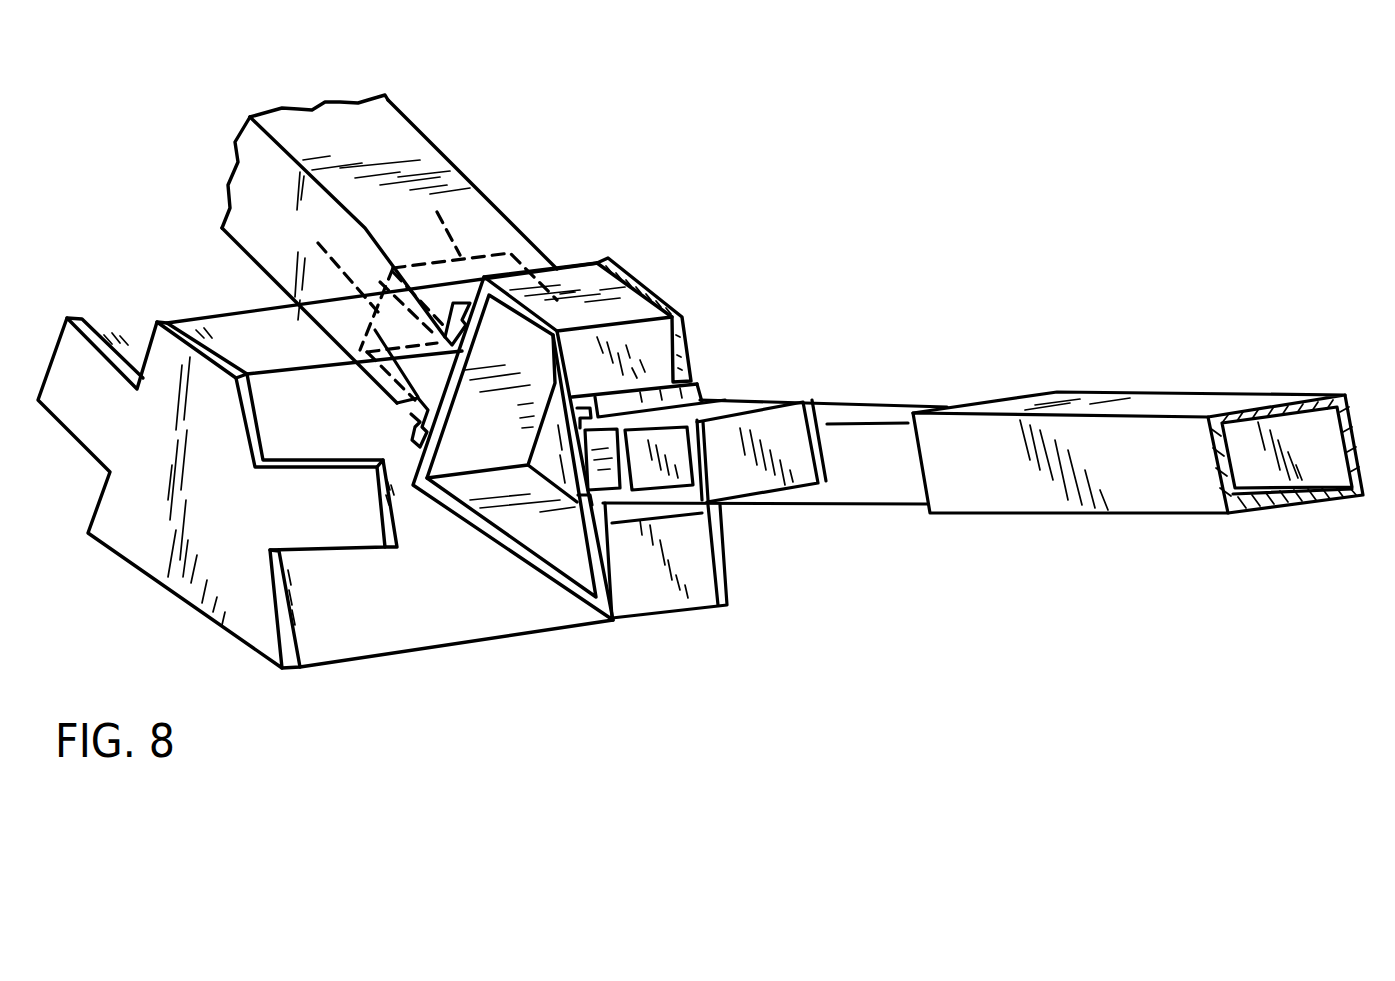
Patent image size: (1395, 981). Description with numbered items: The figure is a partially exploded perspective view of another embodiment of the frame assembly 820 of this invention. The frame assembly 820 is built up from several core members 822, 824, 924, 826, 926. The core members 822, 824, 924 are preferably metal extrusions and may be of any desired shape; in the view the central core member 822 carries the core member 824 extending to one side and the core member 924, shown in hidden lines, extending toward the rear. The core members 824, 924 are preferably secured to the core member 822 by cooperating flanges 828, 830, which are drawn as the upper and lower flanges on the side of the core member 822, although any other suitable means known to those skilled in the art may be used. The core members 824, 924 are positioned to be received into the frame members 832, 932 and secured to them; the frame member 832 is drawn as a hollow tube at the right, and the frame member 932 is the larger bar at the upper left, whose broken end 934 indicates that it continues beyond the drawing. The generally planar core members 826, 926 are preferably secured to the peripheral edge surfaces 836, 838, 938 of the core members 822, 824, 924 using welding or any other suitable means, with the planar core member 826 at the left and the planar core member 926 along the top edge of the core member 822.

The frame assembly 820 is at (592, 243).
The core member 822 is at (652, 292).
The core member 824 is at (727, 398).
The planar core member 826 is at (92, 357).
The cooperating flange 828 is at (703, 372).
The cooperating flange 830 is at (603, 527).
The frame member 832 is at (1012, 398).
The peripheral edge surface 836 is at (602, 583).
The peripheral edge surface 838 is at (703, 478).
The core member 924 is at (437, 213).
The planar core member 926 is at (627, 277).
The frame member 932 is at (487, 228).
The bar 934 is at (383, 120).
The peripheral edge surface 938 is at (318, 243).